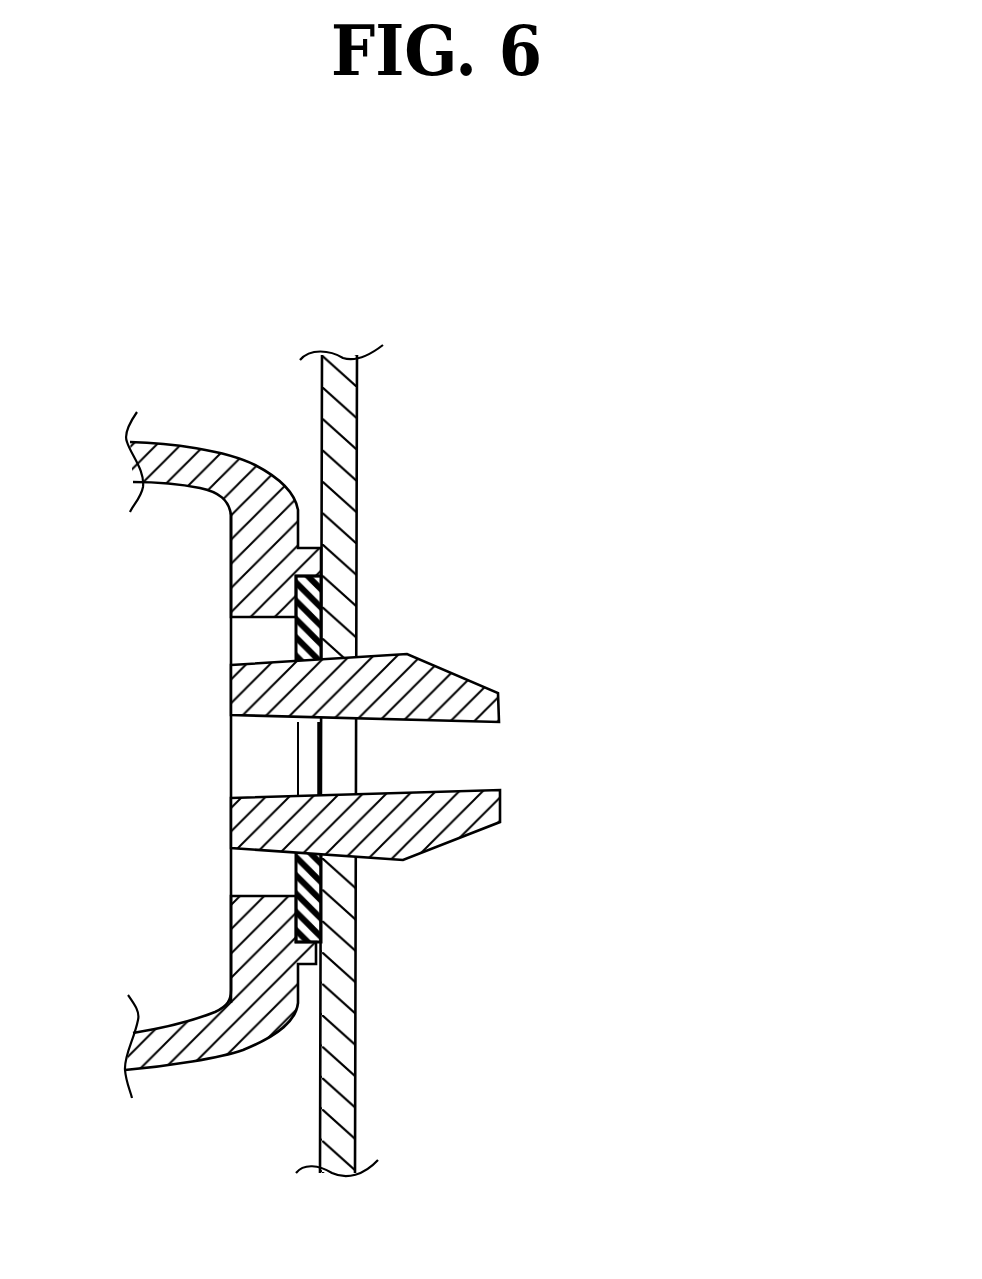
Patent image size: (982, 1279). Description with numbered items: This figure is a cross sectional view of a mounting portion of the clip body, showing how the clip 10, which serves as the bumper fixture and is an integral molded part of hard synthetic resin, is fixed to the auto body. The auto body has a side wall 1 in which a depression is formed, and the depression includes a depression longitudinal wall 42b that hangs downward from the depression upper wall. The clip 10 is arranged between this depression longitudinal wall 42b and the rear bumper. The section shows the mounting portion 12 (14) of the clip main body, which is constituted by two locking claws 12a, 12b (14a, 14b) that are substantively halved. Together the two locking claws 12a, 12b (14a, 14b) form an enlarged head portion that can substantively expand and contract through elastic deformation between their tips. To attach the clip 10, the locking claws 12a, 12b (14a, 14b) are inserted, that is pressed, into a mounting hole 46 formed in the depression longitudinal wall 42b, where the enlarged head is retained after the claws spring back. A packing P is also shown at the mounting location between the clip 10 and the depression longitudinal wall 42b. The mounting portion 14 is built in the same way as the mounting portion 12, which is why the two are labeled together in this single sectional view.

The clip 10 is at (160, 377).
The depression longitudinal wall 42b is at (447, 760).
The side wall 1 is at (356, 400).
The packing P is at (317, 598).
The mounting hole 46 is at (357, 682).
The locking claw 12a is at (505, 672).
The locking claw 14a is at (497, 692).
The locking claw 12b is at (514, 825).
The locking claw 14b is at (500, 805).
The mounting portion 12 is at (514, 792).
The mounting portion 14 is at (514, 707).